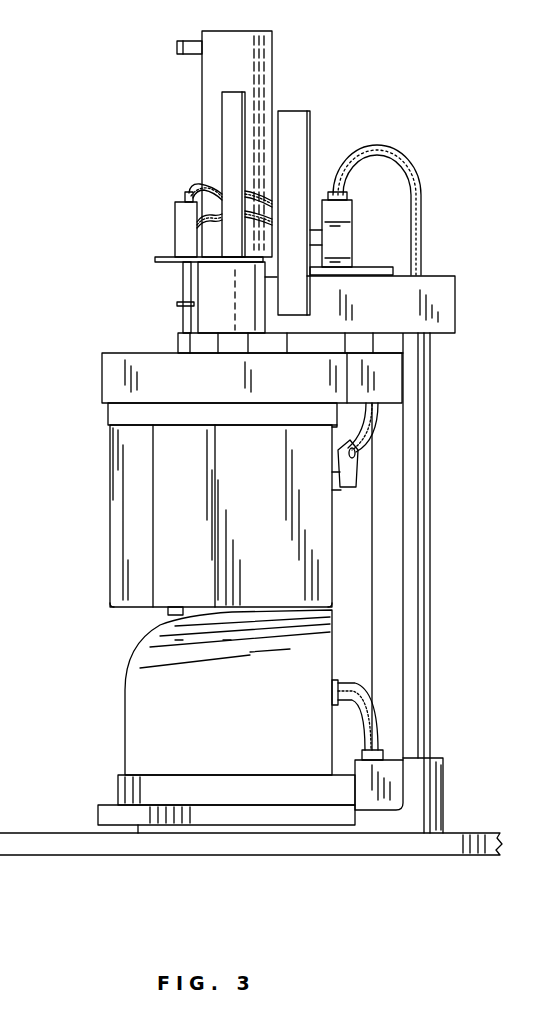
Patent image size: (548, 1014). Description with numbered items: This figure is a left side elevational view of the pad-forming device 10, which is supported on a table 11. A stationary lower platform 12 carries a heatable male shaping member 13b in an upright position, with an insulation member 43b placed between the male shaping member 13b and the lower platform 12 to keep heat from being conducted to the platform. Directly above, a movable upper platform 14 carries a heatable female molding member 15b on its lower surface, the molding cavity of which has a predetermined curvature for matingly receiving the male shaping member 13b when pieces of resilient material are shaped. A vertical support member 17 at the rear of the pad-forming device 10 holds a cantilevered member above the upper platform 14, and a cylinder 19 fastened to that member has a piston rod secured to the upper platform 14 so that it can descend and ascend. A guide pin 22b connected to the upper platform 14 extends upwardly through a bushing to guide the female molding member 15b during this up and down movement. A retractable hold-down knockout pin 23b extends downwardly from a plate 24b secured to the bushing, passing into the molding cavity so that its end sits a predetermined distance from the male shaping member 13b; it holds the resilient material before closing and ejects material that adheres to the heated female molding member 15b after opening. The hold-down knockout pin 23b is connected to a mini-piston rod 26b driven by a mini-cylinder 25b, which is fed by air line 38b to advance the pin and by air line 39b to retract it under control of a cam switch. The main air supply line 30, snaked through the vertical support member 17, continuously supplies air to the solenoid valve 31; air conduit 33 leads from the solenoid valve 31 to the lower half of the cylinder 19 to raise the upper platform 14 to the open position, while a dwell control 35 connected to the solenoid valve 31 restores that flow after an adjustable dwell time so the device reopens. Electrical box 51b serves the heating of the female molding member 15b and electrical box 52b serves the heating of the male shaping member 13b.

The pad-forming device 10 is at (388, 82).
The table 11 is at (450, 836).
The lower platform 12 is at (99, 815).
The male shaping member 13b is at (125, 684).
The upper platform 14 is at (101, 373).
The female molding member 15b is at (118, 469).
The vertical support member 17 is at (426, 510).
The cylinder 19 is at (270, 46).
The guide pin 22b is at (243, 100).
The hold-down knockout pin 23b is at (165, 614).
The plate 24b is at (157, 259).
The mini-cylinder 25b is at (176, 226).
The mini-piston rod 26b is at (184, 292).
The main air supply line 30 is at (413, 160).
The solenoid valve 31 is at (352, 221).
The air conduit 33 is at (190, 41).
The dwell control 35 is at (306, 119).
The air line 38b is at (203, 180).
The air line 39b is at (182, 198).
The insulation member 43b is at (122, 785).
The electrical box 51b is at (397, 375).
The electrical box 52b is at (396, 770).